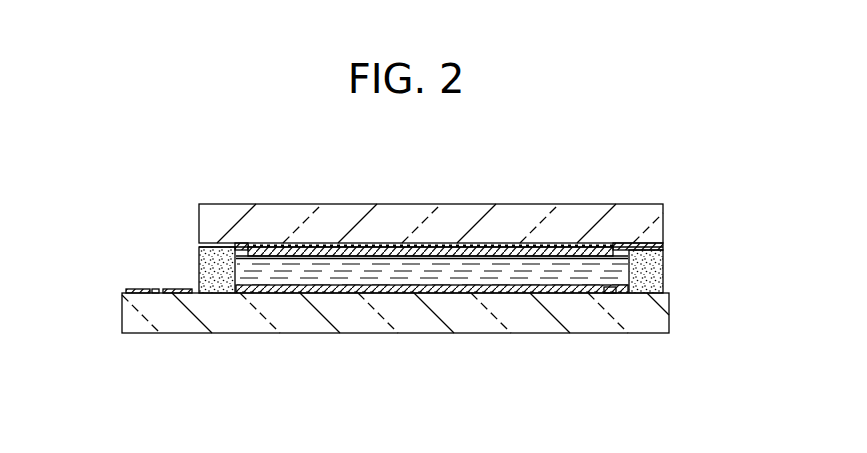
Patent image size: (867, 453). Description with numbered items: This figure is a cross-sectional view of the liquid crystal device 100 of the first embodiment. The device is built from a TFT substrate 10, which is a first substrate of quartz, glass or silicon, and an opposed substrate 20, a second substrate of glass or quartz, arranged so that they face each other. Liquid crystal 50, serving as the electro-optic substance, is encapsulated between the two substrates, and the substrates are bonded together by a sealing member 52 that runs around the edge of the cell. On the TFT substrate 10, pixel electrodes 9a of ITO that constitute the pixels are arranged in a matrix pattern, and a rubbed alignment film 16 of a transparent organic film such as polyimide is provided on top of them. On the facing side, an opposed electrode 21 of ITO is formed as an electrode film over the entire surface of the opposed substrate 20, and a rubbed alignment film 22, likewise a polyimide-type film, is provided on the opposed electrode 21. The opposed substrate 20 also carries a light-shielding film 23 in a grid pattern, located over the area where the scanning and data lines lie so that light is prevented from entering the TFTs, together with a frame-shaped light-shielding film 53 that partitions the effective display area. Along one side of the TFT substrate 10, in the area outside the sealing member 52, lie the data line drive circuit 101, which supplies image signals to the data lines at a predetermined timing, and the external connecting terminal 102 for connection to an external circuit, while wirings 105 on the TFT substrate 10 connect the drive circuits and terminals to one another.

The liquid crystal device 100 is at (605, 110).
The opposed substrate 20 is at (328, 213).
The opposed electrode 21 is at (420, 247).
The alignment film 22 is at (633, 245).
The light-shielding film 23 is at (557, 247).
The light-shielding film 53 is at (248, 247).
The sealing member 52 is at (200, 253).
The liquid crystal 50 is at (388, 275).
The alignment film 16 is at (652, 289).
The pixel electrodes 9a is at (289, 291).
The TFT substrate 10 is at (460, 323).
The external connecting terminal 102 is at (133, 289).
The wirings 105 is at (155, 289).
The data line drive circuit 101 is at (182, 292).